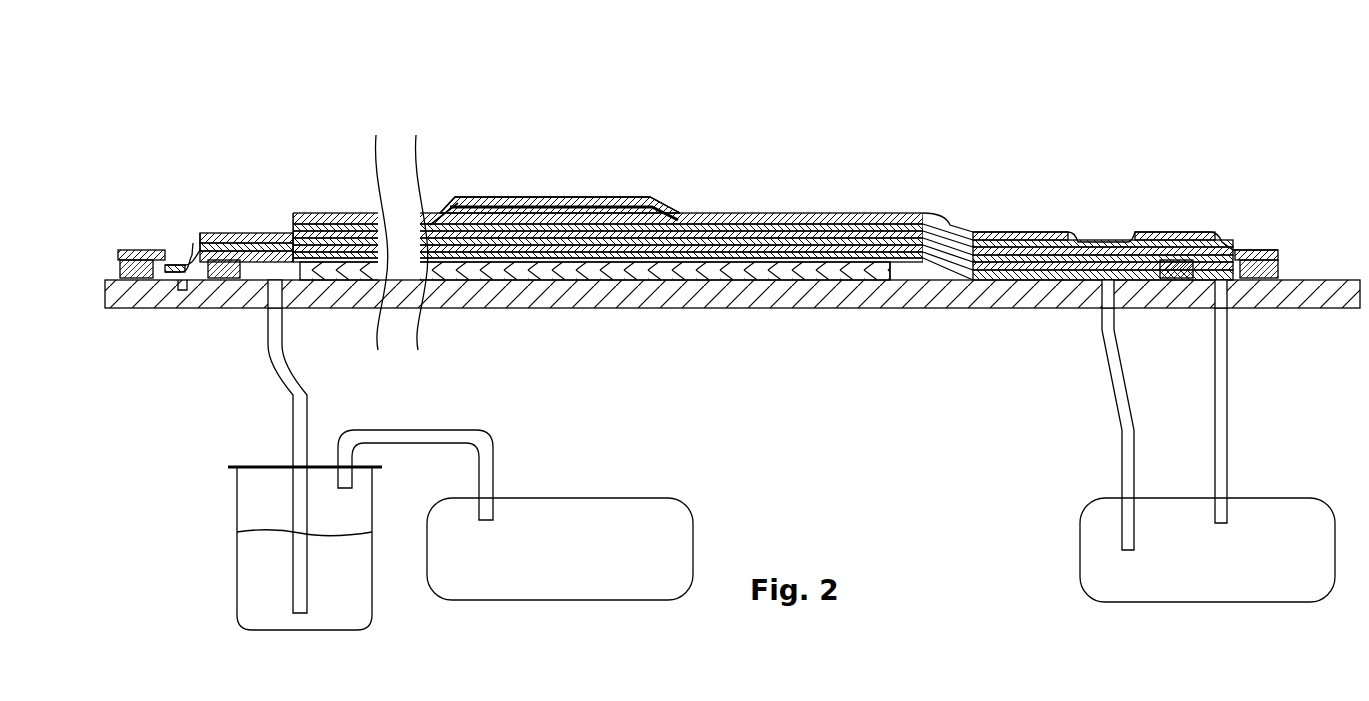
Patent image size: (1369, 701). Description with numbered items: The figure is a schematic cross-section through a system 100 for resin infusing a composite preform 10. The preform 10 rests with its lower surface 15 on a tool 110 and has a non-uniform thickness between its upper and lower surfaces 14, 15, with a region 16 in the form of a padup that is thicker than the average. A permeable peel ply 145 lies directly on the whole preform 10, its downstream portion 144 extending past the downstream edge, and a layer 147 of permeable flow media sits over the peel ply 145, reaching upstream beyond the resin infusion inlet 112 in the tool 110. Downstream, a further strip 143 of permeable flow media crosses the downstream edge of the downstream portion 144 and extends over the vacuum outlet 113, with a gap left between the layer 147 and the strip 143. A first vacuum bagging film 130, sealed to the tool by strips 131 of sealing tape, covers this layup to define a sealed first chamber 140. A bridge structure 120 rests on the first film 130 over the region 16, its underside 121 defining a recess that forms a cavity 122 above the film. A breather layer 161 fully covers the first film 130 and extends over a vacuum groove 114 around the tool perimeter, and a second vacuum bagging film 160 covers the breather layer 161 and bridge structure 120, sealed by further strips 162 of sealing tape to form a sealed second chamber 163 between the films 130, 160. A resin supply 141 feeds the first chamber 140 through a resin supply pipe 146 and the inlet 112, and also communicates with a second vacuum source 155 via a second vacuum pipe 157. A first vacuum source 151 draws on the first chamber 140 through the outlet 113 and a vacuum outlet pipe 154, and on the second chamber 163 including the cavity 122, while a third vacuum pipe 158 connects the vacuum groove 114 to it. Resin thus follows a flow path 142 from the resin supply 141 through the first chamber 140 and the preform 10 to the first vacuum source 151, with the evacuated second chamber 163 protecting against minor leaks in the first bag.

The system 100 is at (480, 125).
The tool 110 is at (546, 298).
The resin infusion inlet 112 is at (284, 308).
The vacuum outlet 113 is at (1103, 302).
The vacuum groove 114 is at (183, 292).
The composite preform 10 is at (626, 272).
The upper surface 14 is at (608, 241).
The lower surface 15 is at (608, 260).
The region 16 is at (608, 227).
The bridge structure 120 is at (548, 197).
The underside 121 is at (523, 205).
The cavity 122 is at (472, 200).
The first vacuum bagging film 130 is at (322, 213).
The strips of sealing tape 131 is at (224, 280).
The first chamber 140 is at (370, 235).
The resin supply 141 is at (247, 576).
The flow path 142 is at (258, 260).
The strip of permeable flow media 143 is at (1060, 280).
The downstream portion of the peel ply 144 is at (948, 275).
The peel ply 145 is at (608, 255).
The resin supply pipe 146 is at (293, 411).
The layer of permeable flow media 147 is at (608, 234).
The first vacuum source 151 is at (1207, 550).
The vacuum outlet pipe 154 is at (1122, 451).
The second vacuum source 155 is at (560, 549).
The second vacuum pipe 157 is at (415, 433).
The third vacuum pipe 158 is at (1223, 451).
The second vacuum bagging film 160 is at (912, 213).
The breather layer 161 is at (608, 218).
The strips of sealing tape 162 is at (138, 272).
The second chamber 163 is at (198, 258).